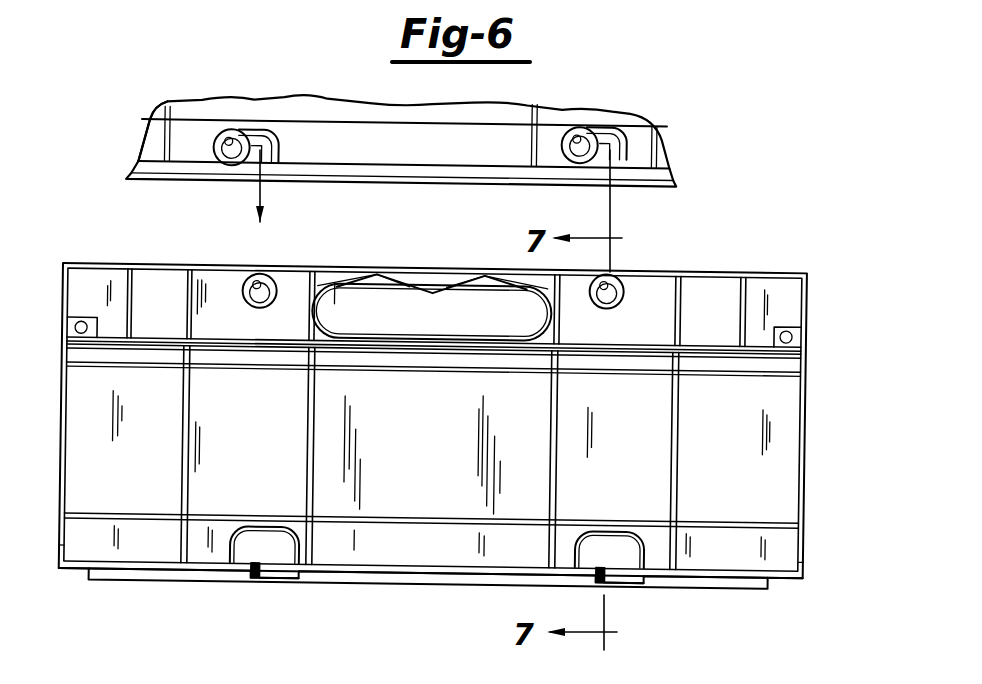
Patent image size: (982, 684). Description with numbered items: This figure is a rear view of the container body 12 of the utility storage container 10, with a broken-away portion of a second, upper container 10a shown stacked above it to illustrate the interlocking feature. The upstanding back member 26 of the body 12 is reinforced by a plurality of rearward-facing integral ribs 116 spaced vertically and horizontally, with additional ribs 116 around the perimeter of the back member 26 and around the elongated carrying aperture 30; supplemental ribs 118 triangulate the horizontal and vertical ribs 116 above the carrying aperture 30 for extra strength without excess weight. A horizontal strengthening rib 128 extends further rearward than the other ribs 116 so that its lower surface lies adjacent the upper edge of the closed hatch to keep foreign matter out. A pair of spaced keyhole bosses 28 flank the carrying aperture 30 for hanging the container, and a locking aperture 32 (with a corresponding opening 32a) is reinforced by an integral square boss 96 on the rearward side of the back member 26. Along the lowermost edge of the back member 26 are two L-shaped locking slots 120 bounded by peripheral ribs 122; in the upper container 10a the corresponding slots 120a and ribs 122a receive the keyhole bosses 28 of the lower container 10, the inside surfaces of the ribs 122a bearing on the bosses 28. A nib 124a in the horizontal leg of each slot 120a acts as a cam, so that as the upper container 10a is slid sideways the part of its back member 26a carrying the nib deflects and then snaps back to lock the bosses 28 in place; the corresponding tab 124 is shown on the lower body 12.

The utility storage container 10 is at (730, 262).
The upper utility container 10a is at (678, 136).
The container body 12 is at (435, 442).
The upstanding back member 26 is at (134, 264).
The back member of upper container 26a is at (146, 135).
The keyhole boss 28 is at (266, 272).
The carrying aperture 30 is at (484, 324).
The locking aperture 32 is at (793, 332).
The pin hole 32a is at (74, 327).
The square boss 96 is at (802, 324).
The integral ribs 116 is at (187, 303).
The supplemental ribs 118 is at (347, 280).
The L-shaped locking slot 120 is at (288, 562).
The L-shaped locking slot of upper container 120a is at (290, 145).
The peripheral ribs 122 is at (268, 524).
The peripheral ribs of upper container 122a is at (260, 127).
The tab 124 is at (258, 568).
The nib 124a is at (236, 162).
The horizontal strengthening rib 128 is at (480, 340).